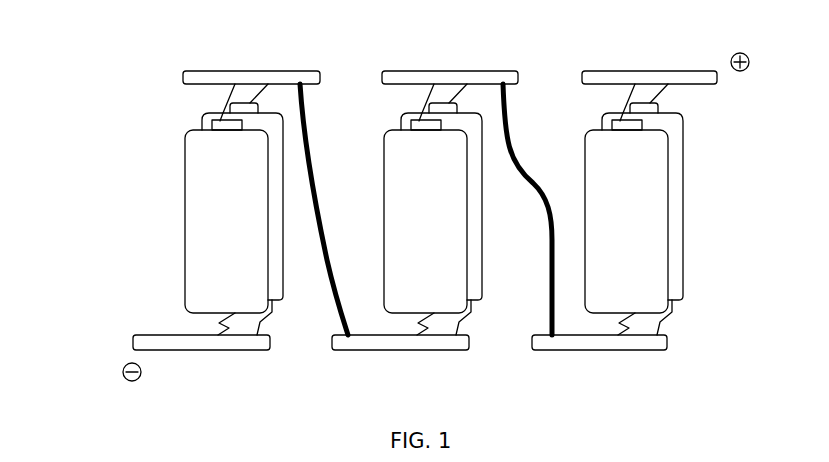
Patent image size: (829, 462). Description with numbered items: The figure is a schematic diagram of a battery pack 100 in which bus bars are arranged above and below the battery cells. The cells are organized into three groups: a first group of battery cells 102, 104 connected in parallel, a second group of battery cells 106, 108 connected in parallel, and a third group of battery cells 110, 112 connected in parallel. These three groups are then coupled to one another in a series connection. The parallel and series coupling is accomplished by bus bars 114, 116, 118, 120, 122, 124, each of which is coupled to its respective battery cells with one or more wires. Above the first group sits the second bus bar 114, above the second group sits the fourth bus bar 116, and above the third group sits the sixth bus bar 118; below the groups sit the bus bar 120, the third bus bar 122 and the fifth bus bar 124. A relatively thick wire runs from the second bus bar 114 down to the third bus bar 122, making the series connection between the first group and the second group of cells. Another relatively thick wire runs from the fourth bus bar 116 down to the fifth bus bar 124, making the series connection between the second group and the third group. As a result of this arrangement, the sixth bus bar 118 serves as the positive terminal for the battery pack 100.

The battery pack 100 is at (127, 45).
The battery cell 102 is at (185, 150).
The battery cell 104 is at (201, 125).
The battery cell 106 is at (385, 136).
The battery cell 108 is at (400, 125).
The battery cell 110 is at (586, 136).
The battery cell 112 is at (600, 125).
The second bus bar 114 is at (284, 70).
The fourth bus bar 116 is at (486, 70).
The sixth bus bar 118 is at (678, 70).
The bus bar 120 is at (200, 352).
The third bus bar 122 is at (400, 352).
The fifth bus bar 124 is at (597, 352).